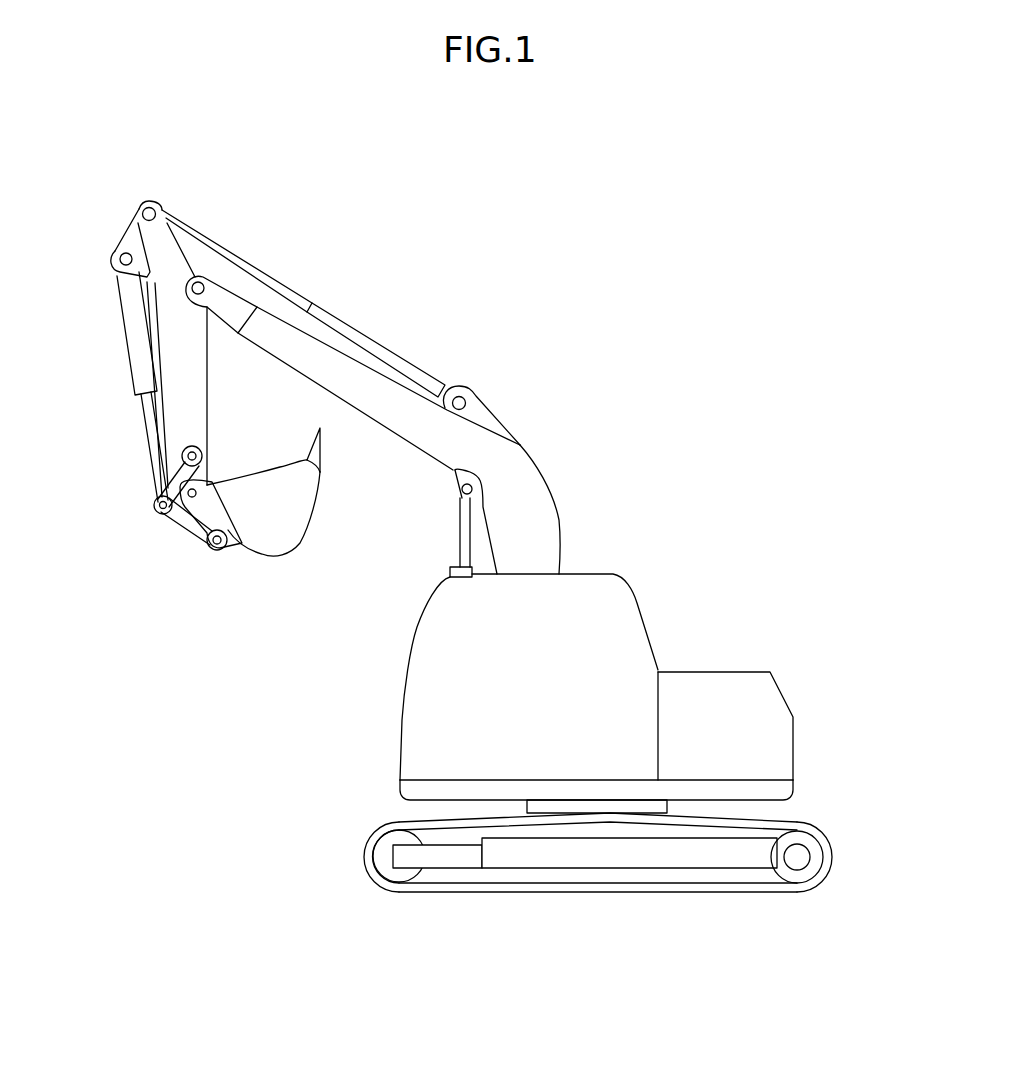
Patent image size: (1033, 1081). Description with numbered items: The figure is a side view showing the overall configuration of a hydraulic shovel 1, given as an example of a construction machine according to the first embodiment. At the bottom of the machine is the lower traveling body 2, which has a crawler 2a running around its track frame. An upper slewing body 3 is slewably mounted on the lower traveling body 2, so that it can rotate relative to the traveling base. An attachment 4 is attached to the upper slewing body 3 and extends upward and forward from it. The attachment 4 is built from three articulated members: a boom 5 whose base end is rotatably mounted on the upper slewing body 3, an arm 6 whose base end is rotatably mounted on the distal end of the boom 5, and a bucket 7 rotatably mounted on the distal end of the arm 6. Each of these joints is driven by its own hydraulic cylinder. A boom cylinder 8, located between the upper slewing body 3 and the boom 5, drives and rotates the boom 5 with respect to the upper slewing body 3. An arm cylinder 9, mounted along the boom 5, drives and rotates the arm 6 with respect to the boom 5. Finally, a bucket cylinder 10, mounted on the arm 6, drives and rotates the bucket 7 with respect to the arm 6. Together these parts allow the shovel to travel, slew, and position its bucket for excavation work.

The hydraulic shovel 1 is at (622, 290).
The lower traveling body 2 is at (843, 848).
The crawler 2a is at (800, 827).
The upper slewing body 3 is at (758, 602).
The attachment 4 is at (399, 291).
The boom 5 is at (542, 493).
The arm 6 is at (195, 388).
The bucket 7 is at (295, 518).
The boom cylinder 8 is at (462, 528).
The arm cylinder 9 is at (415, 372).
The bucket cylinder 10 is at (142, 378).